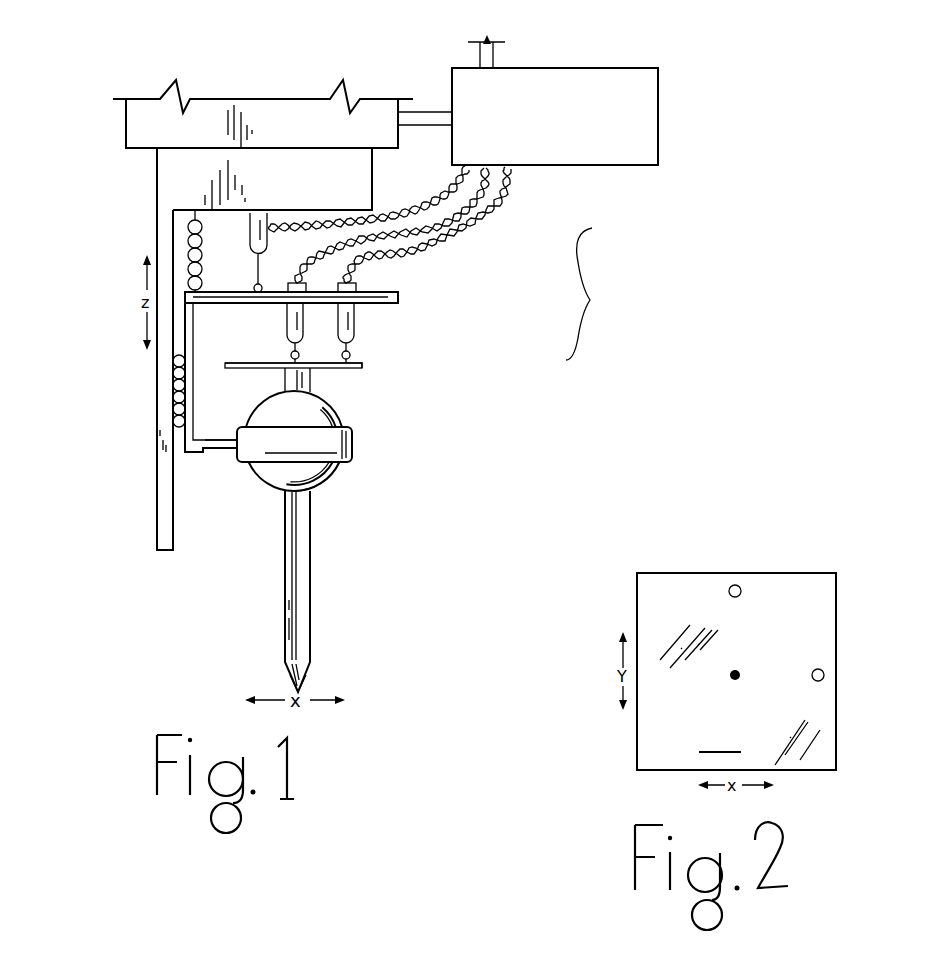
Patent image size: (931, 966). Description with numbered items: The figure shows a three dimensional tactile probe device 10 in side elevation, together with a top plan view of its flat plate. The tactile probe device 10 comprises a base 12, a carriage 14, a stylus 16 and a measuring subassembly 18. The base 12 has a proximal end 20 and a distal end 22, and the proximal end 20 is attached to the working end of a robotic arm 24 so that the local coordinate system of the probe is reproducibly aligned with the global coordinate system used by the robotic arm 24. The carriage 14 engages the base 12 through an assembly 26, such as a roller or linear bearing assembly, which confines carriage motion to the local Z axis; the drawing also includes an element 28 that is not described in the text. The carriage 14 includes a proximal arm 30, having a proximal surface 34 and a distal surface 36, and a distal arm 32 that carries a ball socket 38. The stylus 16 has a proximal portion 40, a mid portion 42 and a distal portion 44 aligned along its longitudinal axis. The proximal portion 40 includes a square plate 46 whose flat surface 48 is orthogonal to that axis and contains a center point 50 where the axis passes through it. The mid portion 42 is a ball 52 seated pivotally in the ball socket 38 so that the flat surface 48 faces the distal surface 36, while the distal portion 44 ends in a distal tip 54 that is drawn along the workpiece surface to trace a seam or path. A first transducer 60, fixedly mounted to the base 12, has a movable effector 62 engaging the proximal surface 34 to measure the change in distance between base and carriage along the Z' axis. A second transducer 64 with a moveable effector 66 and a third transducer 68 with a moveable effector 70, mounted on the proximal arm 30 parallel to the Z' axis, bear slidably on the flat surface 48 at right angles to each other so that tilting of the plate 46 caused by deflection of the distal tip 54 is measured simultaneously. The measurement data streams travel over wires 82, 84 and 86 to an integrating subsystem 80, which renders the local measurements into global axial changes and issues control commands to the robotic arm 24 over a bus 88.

In FIG. 1, the three dimensional tactile probe device 10 is at (506, 467).
In FIG. 1, the base 12 is at (155, 375).
In FIG. 1, the carriage 14 is at (197, 377).
In FIG. 1, the stylus 16 is at (284, 516).
In FIG. 1, the measuring subassembly 18 is at (598, 294).
In FIG. 1, the proximal end 20 is at (157, 160).
In FIG. 1, the distal end 22 is at (162, 551).
In FIG. 1, the robotic arm 24 is at (124, 112).
In FIG. 1, the assembly 26 is at (173, 437).
In FIG. 1, the upper spring 28 is at (186, 237).
In FIG. 1, the proximal arm 30 is at (400, 298).
In FIG. 1, the distal arm 32 is at (200, 452).
In FIG. 1, the proximal surface 34 is at (372, 294).
In FIG. 1, the distal surface 36 is at (380, 303).
In FIG. 1, the ball socket 38 is at (353, 442).
In FIG. 1, the proximal portion 40 is at (311, 375).
In FIG. 1, the mid portion 42 is at (330, 488).
In FIG. 1, the distal portion 44 is at (316, 630).
In FIG. 1, the plate 46 is at (366, 370).
In FIG. 2, the plate 46 is at (839, 733).
In FIG. 1, the flat surface 48 is at (237, 363).
In FIG. 2, the flat surface 48 is at (720, 737).
In FIG. 2, the center point 50 is at (735, 672).
In FIG. 1, the ball 52 is at (338, 413).
In FIG. 1, the distal tip 54 is at (300, 692).
In FIG. 1, the first transducer 60 is at (252, 228).
In FIG. 1, the movable effector 62 is at (254, 288).
In FIG. 1, the second transducer 64 is at (355, 323).
In FIG. 1, the moveable effector 66 is at (352, 356).
In FIG. 2, the moveable effector 66 is at (824, 675).
In FIG. 1, the third transducer 68 is at (287, 318).
In FIG. 1, the moveable effector 70 is at (291, 355).
In FIG. 2, the moveable effector 70 is at (741, 592).
In FIG. 1, the integrating subsystem 80 is at (663, 123).
In FIG. 1, the wire 82 is at (410, 213).
In FIG. 1, the wire 84 is at (517, 197).
In FIG. 1, the wire 86 is at (445, 226).
In FIG. 1, the bus 88 is at (493, 58).